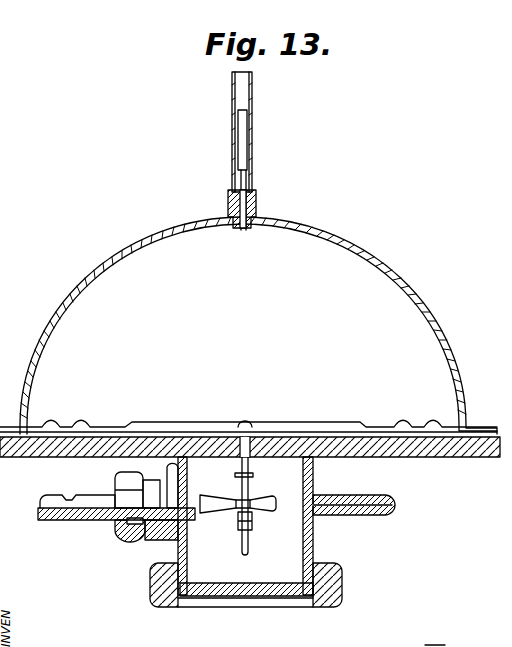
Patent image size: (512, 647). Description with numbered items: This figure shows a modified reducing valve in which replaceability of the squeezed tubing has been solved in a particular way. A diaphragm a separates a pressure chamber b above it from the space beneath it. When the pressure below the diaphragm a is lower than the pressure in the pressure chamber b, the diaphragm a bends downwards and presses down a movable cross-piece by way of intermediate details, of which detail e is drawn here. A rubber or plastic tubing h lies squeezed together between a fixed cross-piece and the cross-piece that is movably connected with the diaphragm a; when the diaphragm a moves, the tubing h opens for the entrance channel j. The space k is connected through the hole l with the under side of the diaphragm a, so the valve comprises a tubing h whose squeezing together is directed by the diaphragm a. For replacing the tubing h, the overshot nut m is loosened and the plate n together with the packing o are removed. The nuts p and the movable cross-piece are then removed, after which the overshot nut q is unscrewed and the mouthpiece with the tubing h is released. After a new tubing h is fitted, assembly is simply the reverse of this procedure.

The diaphragm a is at (372, 430).
The pressure chamber b is at (118, 290).
The detail e is at (258, 430).
The rubber or plastic tubing h is at (276, 504).
The entrance channel j is at (42, 512).
The space k is at (275, 575).
The hole l is at (233, 440).
The overshot nut m is at (150, 586).
The plate n is at (228, 598).
The packing o is at (180, 603).
The nuts p is at (240, 524).
The overshot nut q is at (120, 540).